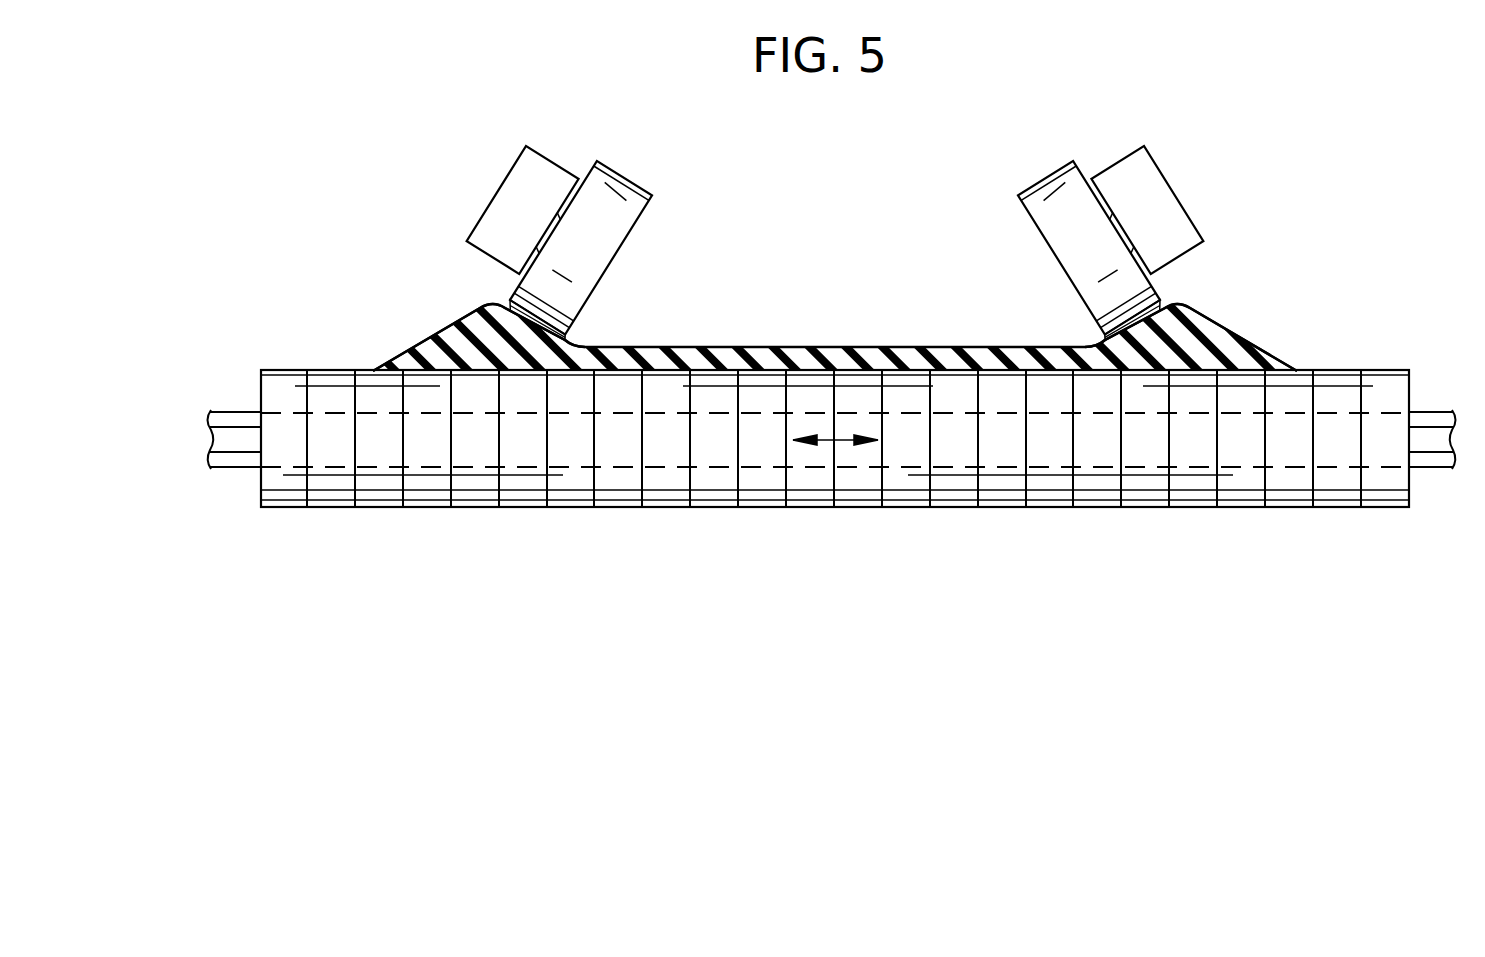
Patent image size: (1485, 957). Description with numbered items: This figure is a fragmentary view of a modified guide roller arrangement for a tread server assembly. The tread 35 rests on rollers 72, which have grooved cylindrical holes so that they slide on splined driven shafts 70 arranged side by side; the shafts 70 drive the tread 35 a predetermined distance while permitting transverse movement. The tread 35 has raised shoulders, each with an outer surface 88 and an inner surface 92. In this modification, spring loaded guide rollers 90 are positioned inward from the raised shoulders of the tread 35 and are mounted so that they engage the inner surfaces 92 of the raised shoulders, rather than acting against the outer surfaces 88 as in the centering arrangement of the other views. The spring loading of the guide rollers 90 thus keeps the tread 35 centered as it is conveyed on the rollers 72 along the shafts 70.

The tread 35 is at (843, 338).
The splined driven shaft 70 is at (235, 462).
The roller 72 is at (473, 498).
The outer surface of raised shoulder 88 is at (425, 343).
The spring loaded guide roller 90 is at (620, 188).
The inner surface of raised shoulder 92 is at (540, 320).